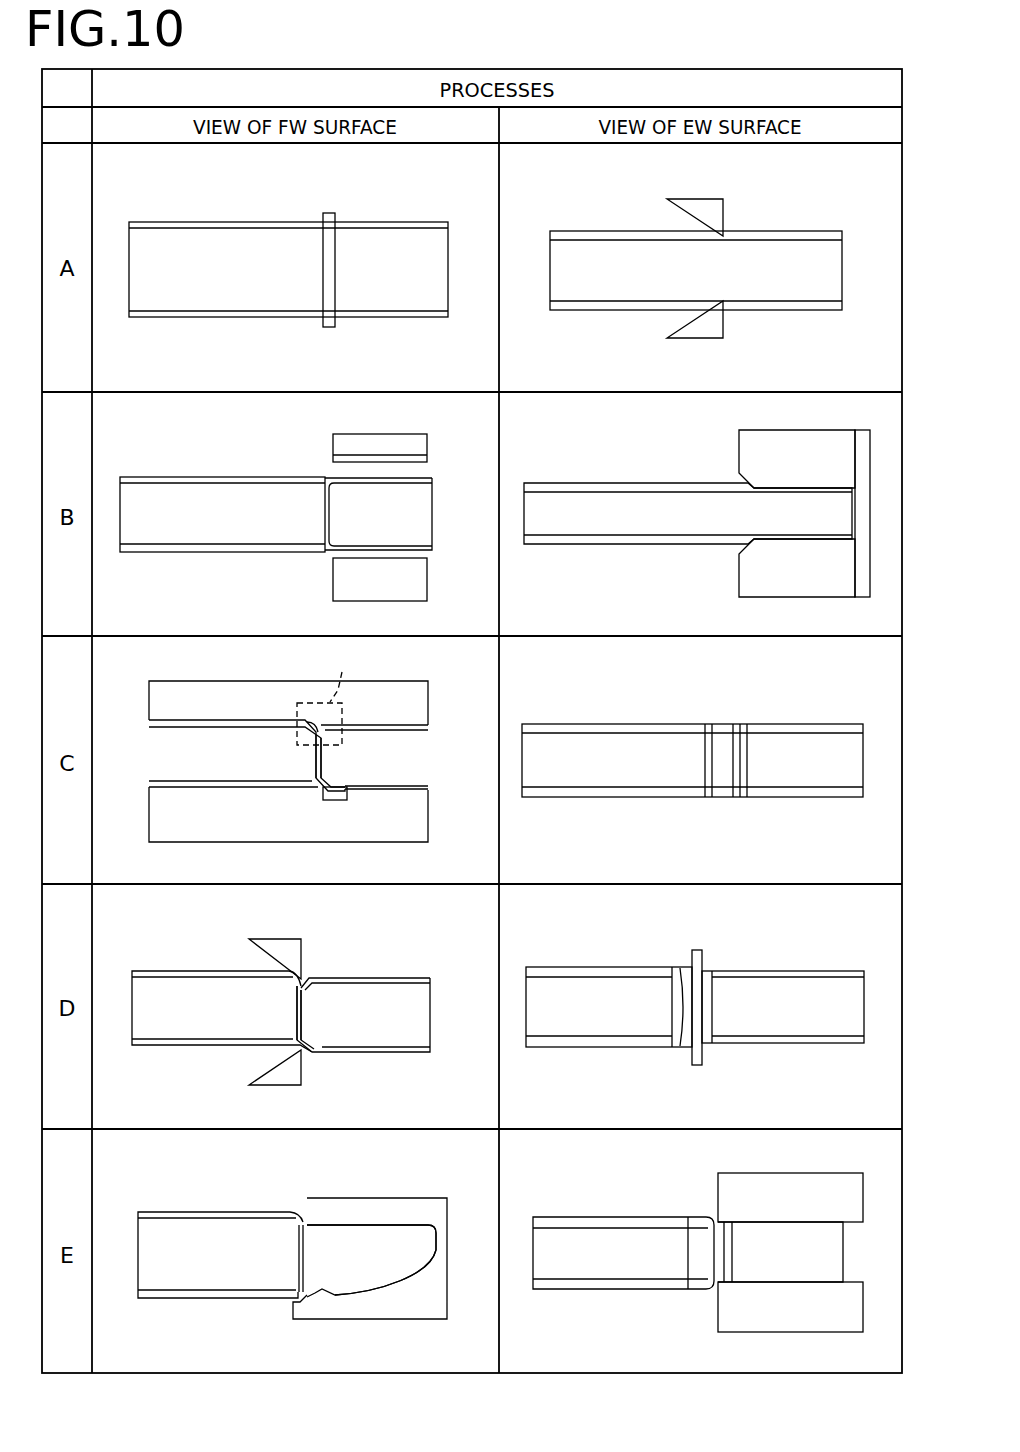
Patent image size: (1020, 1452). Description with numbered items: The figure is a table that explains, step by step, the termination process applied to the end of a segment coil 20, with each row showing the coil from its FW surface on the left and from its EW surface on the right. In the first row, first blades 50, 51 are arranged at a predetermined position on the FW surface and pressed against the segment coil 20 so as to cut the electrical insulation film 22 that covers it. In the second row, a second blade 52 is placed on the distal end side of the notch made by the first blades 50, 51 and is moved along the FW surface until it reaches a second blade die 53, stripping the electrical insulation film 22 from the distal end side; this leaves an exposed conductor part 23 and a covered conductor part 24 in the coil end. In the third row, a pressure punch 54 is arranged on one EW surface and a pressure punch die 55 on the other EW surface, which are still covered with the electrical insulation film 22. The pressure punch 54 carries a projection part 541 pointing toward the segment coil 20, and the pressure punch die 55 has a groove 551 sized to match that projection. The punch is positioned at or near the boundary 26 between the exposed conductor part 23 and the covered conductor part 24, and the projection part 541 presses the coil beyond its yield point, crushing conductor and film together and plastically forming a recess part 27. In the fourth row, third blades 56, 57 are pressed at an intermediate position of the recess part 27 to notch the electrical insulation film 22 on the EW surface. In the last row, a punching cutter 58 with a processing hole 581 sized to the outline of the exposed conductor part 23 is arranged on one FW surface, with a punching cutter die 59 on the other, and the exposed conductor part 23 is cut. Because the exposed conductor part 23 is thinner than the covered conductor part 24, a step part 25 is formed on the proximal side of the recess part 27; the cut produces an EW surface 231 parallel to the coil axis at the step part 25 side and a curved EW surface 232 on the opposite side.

The segment coil 20 is at (168, 220).
The electrical insulation film 22 is at (418, 478).
The exposed conductor part 23 is at (418, 519).
The covered conductor part 24 is at (190, 530).
The step part 25 is at (305, 1218).
The boundary 26 is at (316, 760).
The recess part 27 is at (303, 980).
The first blade 50 is at (331, 213).
The first blade 51 is at (713, 327).
The second blade 52 is at (333, 443).
The second blade die 53 is at (333, 581).
The pressure punch 54 is at (165, 695).
The projection part 541 is at (325, 731).
The pressure punch die 55 is at (165, 817).
The groove 551 is at (352, 800).
The third blade 56 is at (283, 943).
The third blade 57 is at (290, 1075).
The punching cutter 58 is at (370, 1205).
The processing hole 581 is at (410, 1230).
The punching cutter die 59 is at (730, 1310).
The EW surface 231 is at (337, 1225).
The EW surface 232 is at (400, 1278).